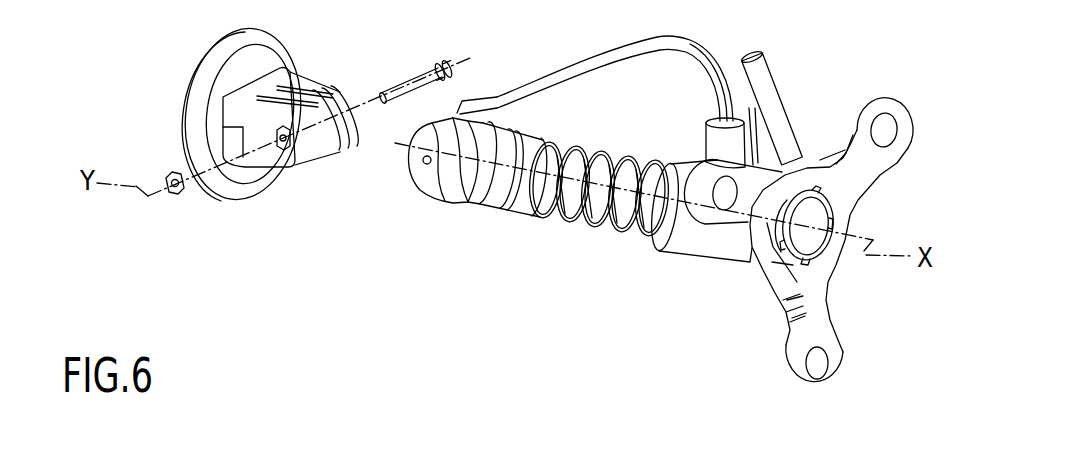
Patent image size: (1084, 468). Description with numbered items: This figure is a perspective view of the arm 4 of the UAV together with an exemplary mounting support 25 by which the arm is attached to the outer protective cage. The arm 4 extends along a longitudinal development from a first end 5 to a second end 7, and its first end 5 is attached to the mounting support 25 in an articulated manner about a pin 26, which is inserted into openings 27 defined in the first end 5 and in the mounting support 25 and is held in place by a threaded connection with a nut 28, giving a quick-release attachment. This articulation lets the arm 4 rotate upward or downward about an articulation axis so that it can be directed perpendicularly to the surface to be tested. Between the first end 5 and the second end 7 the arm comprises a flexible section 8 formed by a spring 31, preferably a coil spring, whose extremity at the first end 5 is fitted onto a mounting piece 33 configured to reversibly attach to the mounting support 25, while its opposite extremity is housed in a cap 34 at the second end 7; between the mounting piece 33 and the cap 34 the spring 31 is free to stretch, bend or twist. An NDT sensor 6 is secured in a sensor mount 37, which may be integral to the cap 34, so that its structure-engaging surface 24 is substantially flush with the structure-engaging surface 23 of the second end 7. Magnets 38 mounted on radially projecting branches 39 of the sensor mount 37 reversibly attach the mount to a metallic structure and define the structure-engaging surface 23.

The arm 4 is at (333, 343).
The first end 5 is at (415, 222).
The NDT sensor 6 is at (847, 190).
The second end 7 is at (820, 90).
The flexible section 8 is at (592, 250).
The structure-engaging surface 23 is at (793, 317).
The structure-engaging surface 24 is at (793, 265).
The mounting support 25 is at (200, 40).
The pin 26 is at (420, 66).
The openings 27 is at (291, 148).
The nut 28 is at (173, 177).
The spring 31 is at (547, 217).
The mounting piece 33 is at (507, 140).
The cap 34 is at (660, 242).
The sensor mount 37 is at (856, 287).
The magnets 38 is at (885, 127).
The branches 39 is at (790, 317).